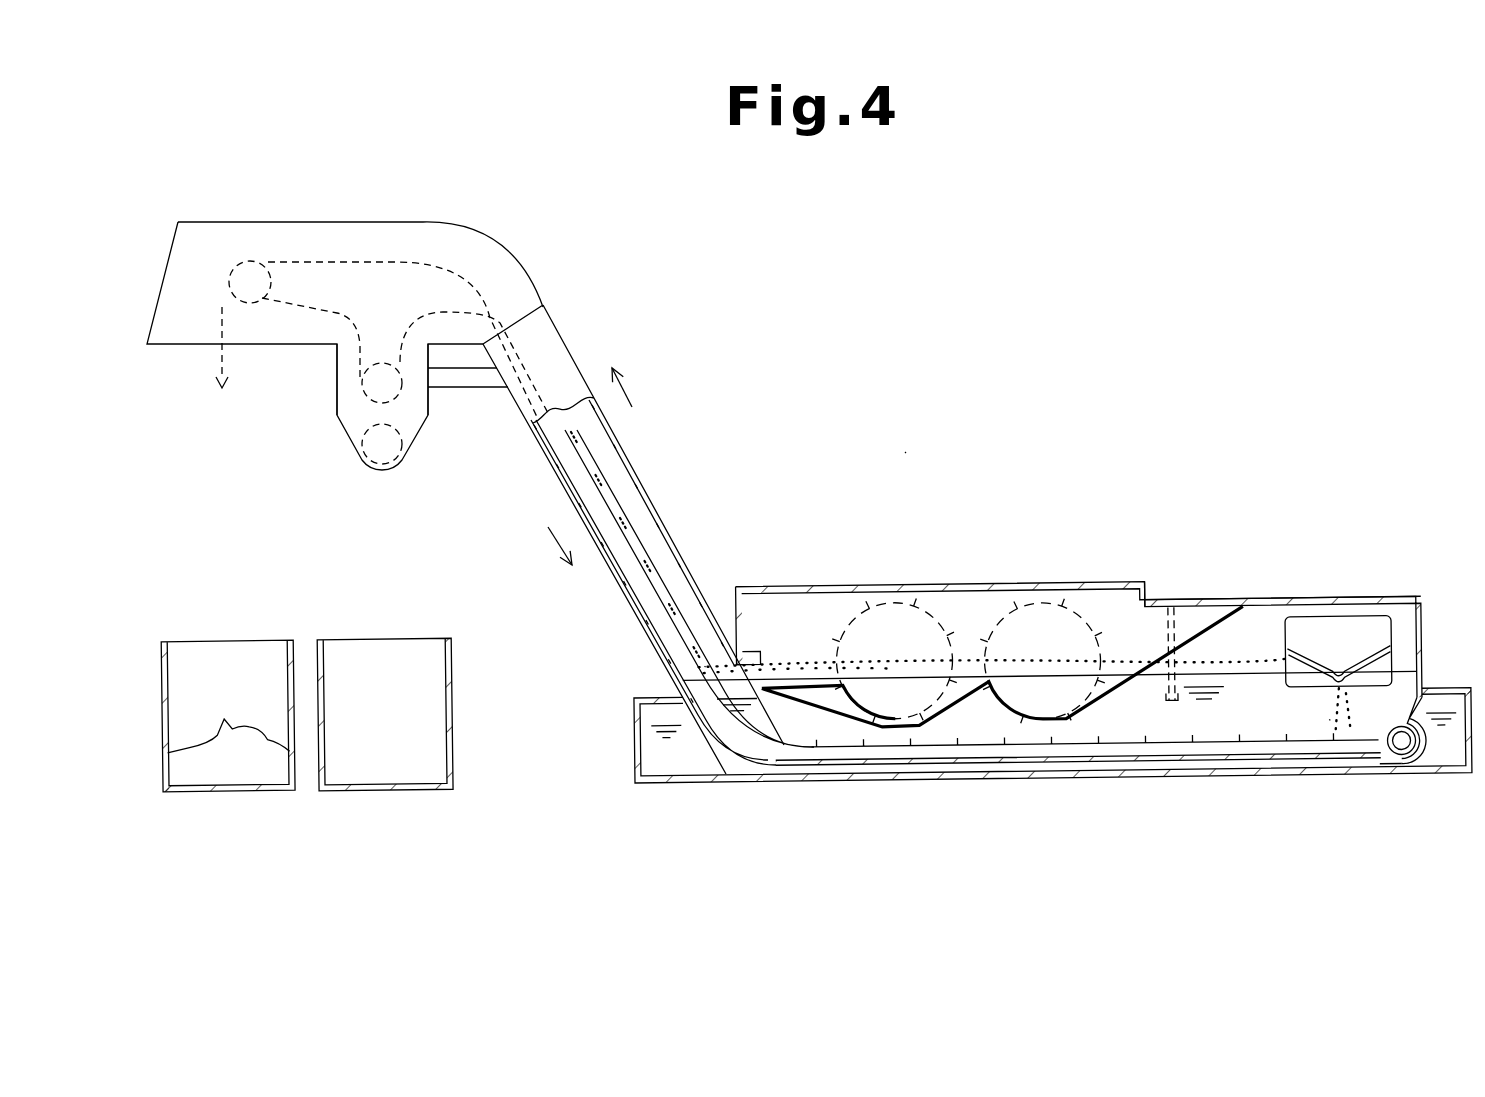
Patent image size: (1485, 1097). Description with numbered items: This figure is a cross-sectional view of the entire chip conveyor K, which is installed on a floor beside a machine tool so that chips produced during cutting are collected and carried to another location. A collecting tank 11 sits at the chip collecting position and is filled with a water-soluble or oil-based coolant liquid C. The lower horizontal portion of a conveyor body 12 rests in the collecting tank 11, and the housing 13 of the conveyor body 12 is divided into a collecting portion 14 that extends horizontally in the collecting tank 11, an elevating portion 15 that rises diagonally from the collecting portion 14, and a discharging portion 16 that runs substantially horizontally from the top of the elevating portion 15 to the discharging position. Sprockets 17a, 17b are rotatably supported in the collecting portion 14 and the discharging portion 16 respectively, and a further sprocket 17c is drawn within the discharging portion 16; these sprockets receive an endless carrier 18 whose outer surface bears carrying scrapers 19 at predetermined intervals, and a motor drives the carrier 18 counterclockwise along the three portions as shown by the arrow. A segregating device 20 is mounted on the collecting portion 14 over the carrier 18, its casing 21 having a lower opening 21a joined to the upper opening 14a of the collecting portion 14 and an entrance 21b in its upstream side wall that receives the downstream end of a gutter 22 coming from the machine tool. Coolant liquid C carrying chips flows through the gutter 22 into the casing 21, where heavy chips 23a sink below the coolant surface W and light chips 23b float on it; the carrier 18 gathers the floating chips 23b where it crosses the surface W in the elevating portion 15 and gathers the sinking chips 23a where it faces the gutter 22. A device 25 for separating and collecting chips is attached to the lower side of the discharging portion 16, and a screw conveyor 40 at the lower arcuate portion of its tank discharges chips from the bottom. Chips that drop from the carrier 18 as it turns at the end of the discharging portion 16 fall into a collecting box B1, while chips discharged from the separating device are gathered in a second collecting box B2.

The collecting tank 11 is at (1470, 784).
The conveyor body 12 is at (577, 358).
The housing 13 is at (630, 457).
The collecting portion 14 is at (1190, 784).
The upper opening 14a is at (1384, 742).
The elevating portion 15 is at (660, 510).
The discharging portion 16 is at (244, 221).
The sprocket 17a is at (1402, 752).
The sprocket 17b is at (232, 268).
The intermediate roller 17c is at (382, 362).
The endless carrier 18 is at (1127, 748).
The carrying scrapers 19 is at (1193, 742).
The segregating device 20 is at (1188, 605).
The casing 21 is at (1287, 606).
The lower opening 21a is at (1388, 722).
The entrance 21b is at (1356, 656).
The gutter 22 is at (1393, 626).
The heavy chips 23a is at (1350, 737).
The light chips 23b is at (723, 669).
The device for separating and collecting chips 25 is at (337, 402).
The screw conveyor 40 is at (357, 456).
The chip conveyor K is at (905, 452).
The coolant surface W is at (1123, 671).
The coolant liquid C is at (1264, 720).
The collecting box B1 is at (238, 790).
The collecting box B2 is at (455, 684).